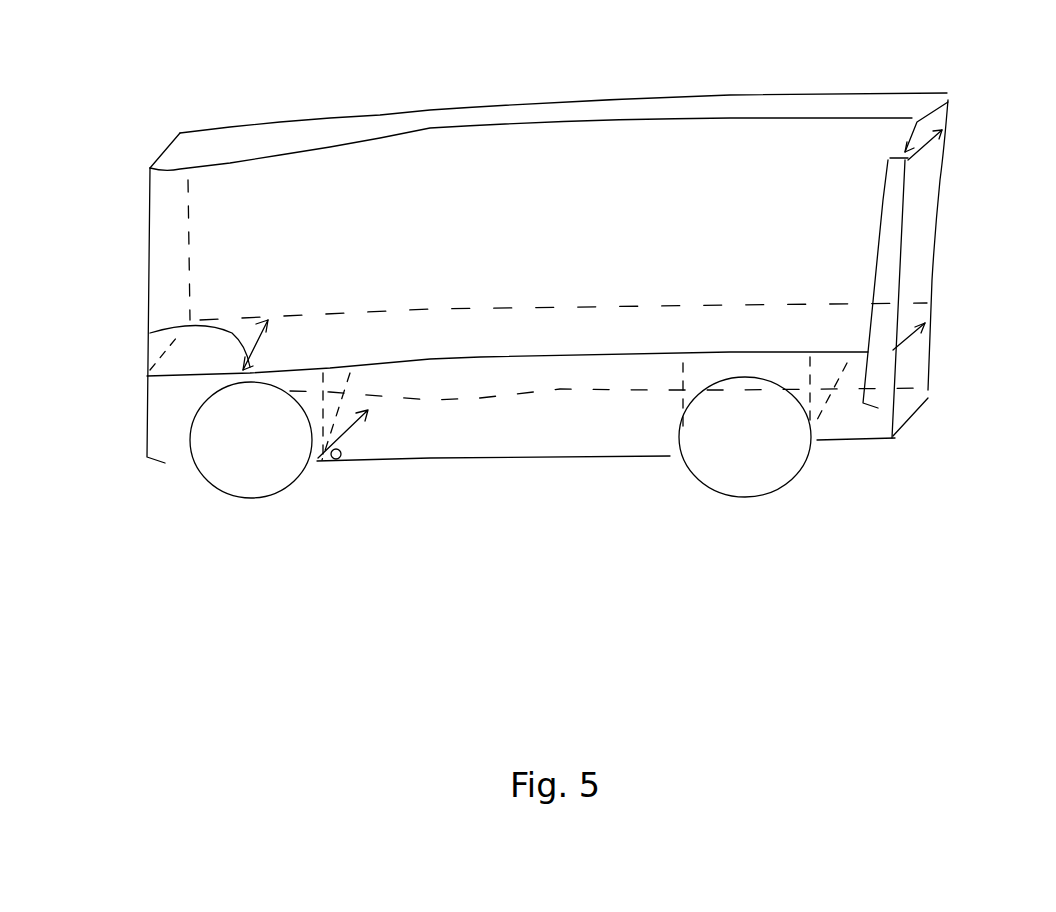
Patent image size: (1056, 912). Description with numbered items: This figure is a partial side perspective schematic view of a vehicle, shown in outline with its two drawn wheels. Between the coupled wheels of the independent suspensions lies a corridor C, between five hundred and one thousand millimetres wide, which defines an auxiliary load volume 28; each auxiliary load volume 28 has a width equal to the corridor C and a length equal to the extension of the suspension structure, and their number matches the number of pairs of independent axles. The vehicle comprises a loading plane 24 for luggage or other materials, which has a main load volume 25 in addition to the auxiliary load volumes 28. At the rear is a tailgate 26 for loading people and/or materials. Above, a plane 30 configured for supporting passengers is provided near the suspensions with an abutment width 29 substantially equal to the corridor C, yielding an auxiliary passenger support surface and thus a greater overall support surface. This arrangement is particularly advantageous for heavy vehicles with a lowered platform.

The loading plane 24 is at (533, 455).
The main load volume 25 is at (492, 382).
The tailgate 26 is at (865, 312).
The auxiliary load volume 28 is at (338, 392).
The abutment width 29 is at (150, 333).
The plane configured for supporting passengers 30 is at (690, 352).
The corridor C is at (341, 456).